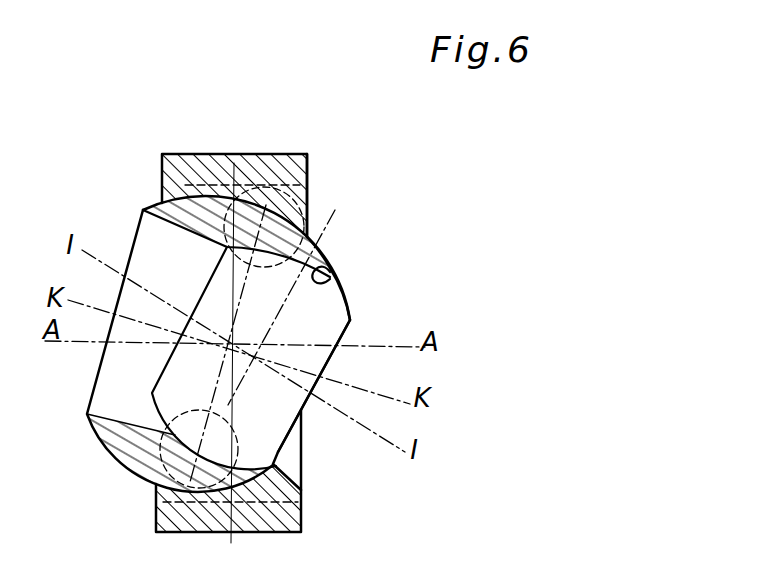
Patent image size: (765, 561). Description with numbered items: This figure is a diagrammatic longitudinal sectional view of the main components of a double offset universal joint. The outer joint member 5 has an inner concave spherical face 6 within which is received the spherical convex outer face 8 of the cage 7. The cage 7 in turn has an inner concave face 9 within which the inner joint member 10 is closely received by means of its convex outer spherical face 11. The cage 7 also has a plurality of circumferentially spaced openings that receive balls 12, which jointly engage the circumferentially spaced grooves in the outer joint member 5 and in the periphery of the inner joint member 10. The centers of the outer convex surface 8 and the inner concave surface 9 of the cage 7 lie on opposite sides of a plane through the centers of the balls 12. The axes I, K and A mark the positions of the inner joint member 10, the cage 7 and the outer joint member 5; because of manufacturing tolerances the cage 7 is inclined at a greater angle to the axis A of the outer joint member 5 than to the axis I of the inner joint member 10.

The outer joint member 5 is at (203, 155).
The inner concave spherical face 6 is at (161, 202).
The cage 7 is at (305, 236).
The convex outer face 8 is at (318, 262).
The inner concave face 9 is at (331, 278).
The inner joint member 10 is at (352, 320).
The convex outer spherical face 11 is at (341, 293).
The balls 12 is at (263, 192).